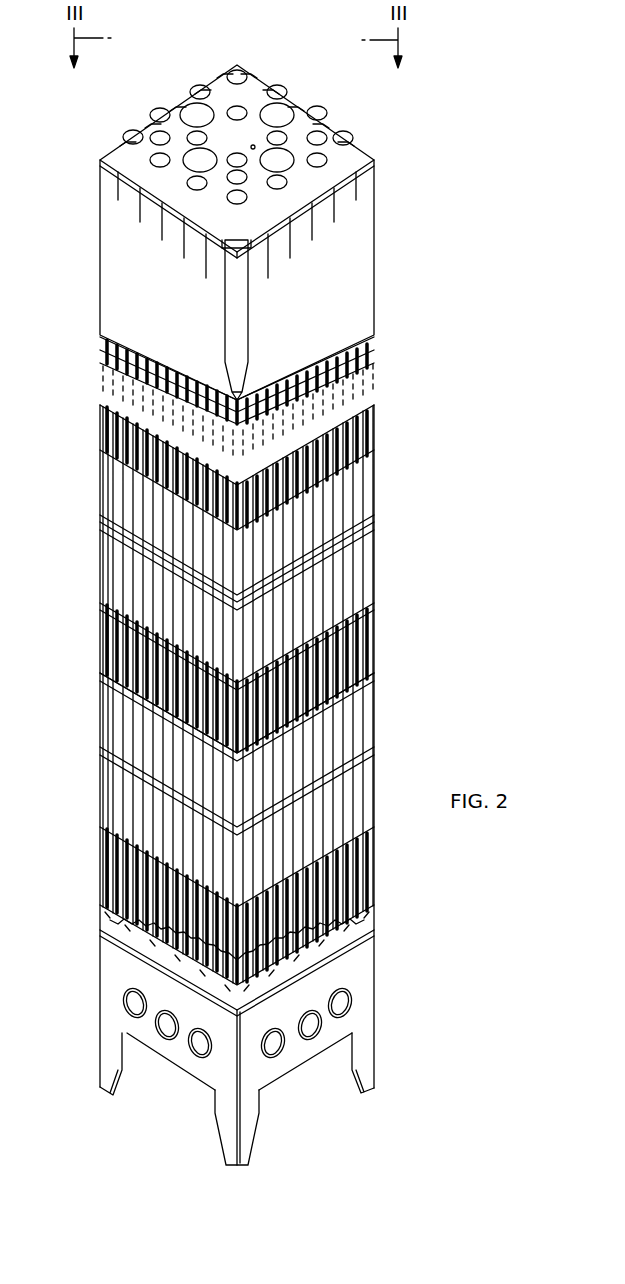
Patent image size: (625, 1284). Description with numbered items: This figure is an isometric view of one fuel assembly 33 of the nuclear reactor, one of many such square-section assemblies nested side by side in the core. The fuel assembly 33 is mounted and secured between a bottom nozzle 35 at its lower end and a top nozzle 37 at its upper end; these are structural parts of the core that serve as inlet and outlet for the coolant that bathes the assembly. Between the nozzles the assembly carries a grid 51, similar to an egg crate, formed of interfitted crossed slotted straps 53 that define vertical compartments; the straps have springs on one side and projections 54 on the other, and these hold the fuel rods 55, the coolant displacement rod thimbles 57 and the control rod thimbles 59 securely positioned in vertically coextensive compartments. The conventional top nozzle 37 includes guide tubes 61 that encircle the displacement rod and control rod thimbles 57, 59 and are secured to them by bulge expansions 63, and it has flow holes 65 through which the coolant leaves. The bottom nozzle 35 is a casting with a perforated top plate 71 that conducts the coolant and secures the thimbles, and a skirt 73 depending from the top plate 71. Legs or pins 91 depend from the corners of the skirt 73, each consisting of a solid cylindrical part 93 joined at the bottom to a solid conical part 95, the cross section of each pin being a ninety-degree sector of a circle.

The fuel assembly 33 is at (430, 705).
The bottom nozzle 35 is at (385, 999).
The top nozzle 37 is at (108, 252).
The grid 51 is at (382, 489).
The straps 53 is at (370, 613).
The projections 54 is at (105, 630).
The fuel rods 55 is at (105, 490).
The coolant displacement rod thimbles 57 is at (160, 360).
The control rod thimbles 59 is at (277, 377).
The guide tubes 61 is at (277, 135).
The bulge expansions 63 is at (100, 355).
The flow holes 65 is at (167, 118).
The top plate 71 is at (368, 952).
The skirt 73 is at (293, 1057).
The legs or pins 91 is at (222, 1119).
The solid cylindrical part 93 is at (365, 1065).
The solid conical part 95 is at (107, 1070).